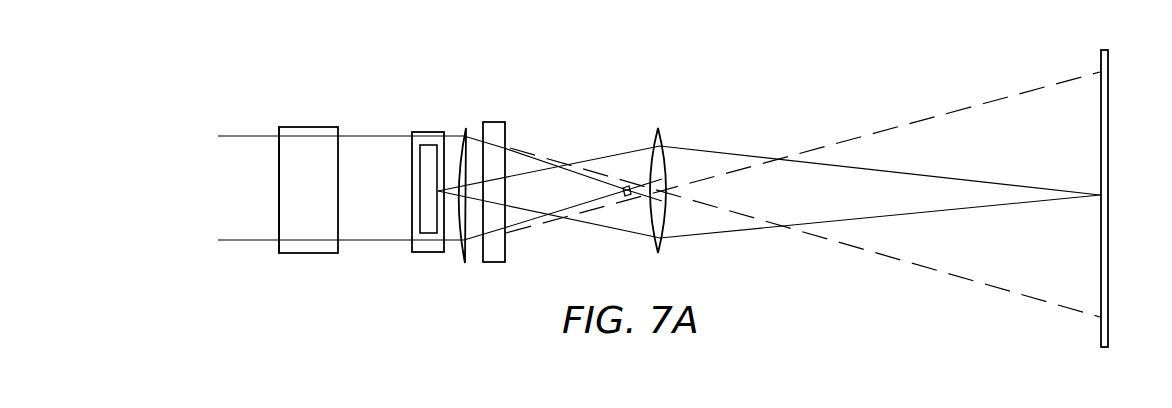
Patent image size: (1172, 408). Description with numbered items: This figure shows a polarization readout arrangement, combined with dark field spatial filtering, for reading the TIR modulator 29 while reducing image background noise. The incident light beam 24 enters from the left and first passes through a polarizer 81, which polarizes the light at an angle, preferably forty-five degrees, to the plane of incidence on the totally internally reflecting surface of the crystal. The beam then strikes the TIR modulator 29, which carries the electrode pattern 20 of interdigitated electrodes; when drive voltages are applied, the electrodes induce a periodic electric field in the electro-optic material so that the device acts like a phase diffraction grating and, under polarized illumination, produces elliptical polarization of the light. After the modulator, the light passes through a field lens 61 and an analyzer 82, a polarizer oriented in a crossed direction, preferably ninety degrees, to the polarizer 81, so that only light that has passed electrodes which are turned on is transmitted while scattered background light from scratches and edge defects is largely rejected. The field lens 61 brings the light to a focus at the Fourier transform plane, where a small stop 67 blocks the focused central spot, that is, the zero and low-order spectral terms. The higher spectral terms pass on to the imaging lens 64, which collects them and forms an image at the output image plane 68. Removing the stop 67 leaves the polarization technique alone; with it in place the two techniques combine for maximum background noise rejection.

The electrode pattern 20 is at (427, 150).
The incident light beam 24 is at (256, 223).
The TIR modulator 29 is at (280, 186).
The field lens 61 is at (466, 127).
The imaging lens 64 is at (662, 138).
The stop 67 is at (632, 165).
The output image plane 68 is at (1108, 160).
The polarizer 81 is at (301, 255).
The analyzer 82 is at (504, 140).